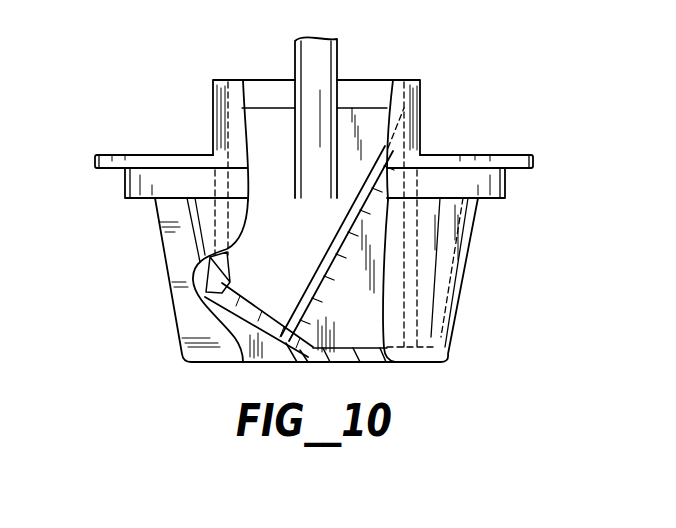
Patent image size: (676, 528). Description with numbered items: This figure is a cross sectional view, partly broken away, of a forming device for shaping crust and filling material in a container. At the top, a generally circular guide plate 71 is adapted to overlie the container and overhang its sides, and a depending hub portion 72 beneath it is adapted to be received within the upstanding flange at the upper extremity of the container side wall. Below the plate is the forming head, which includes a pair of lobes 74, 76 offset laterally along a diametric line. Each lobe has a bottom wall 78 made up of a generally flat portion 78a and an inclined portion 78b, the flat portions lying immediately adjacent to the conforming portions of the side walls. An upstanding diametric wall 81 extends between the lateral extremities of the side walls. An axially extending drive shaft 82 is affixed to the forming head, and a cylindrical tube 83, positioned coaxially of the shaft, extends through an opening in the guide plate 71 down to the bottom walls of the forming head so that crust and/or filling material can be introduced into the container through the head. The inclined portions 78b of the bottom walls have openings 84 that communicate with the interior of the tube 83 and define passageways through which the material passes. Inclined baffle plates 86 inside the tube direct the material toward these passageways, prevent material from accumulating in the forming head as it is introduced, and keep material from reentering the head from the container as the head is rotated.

The guide plate 71 is at (148, 160).
The hub portion 72 is at (143, 200).
The lobe 74 is at (187, 314).
The lobe 76 is at (433, 323).
The bottom wall 78 is at (405, 366).
The generally flat portion 78a is at (364, 364).
The inclined portion 78b is at (291, 356).
The upstanding diametric wall 81 is at (276, 169).
The drive shaft 82 is at (337, 53).
The cylindrical tube 83 is at (420, 117).
The openings 84 is at (262, 320).
The inclined baffle plates 86 is at (333, 243).